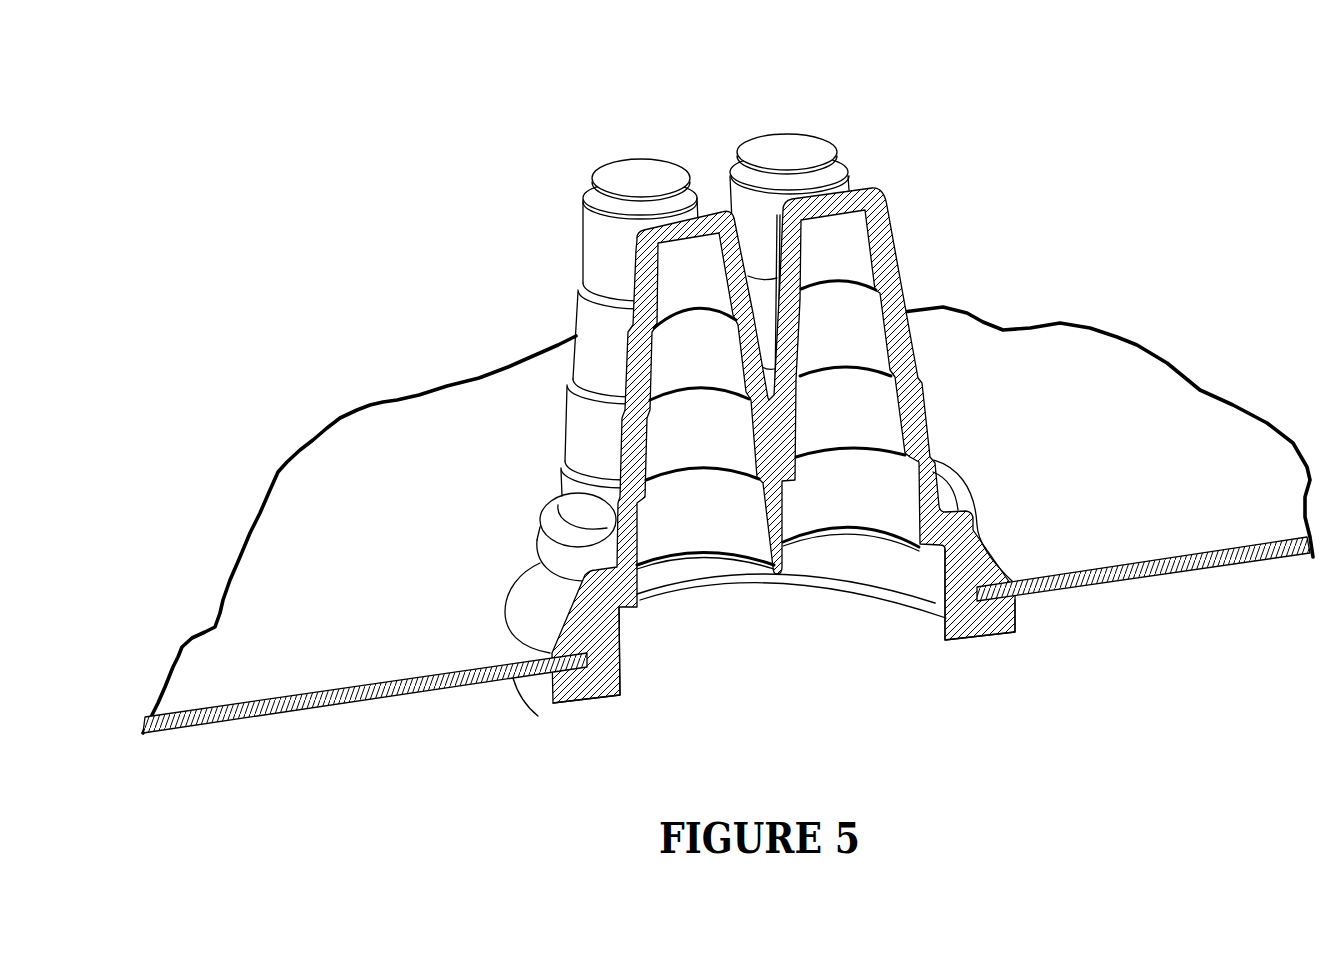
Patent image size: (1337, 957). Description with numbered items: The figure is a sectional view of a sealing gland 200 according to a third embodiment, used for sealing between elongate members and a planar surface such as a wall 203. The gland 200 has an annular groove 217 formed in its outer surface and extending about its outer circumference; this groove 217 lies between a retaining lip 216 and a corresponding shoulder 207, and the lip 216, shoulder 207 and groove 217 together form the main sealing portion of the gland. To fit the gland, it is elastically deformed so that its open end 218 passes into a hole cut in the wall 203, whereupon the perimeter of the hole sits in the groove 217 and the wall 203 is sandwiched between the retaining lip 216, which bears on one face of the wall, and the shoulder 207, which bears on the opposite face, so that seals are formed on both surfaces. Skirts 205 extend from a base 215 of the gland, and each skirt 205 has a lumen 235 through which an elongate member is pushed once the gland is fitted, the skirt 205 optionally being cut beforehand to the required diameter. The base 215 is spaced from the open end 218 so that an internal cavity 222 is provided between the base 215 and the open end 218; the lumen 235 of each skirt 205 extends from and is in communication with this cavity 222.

The sealing gland 200 is at (728, 405).
The wall 203 is at (394, 444).
The skirt 205 is at (604, 257).
The shoulder 207 is at (538, 682).
The base 215 is at (580, 537).
The retaining lip 216 is at (537, 613).
The annular groove 217 is at (573, 660).
The open end 218 is at (975, 625).
The internal cavity 222 is at (828, 608).
The lumen 235 is at (858, 340).